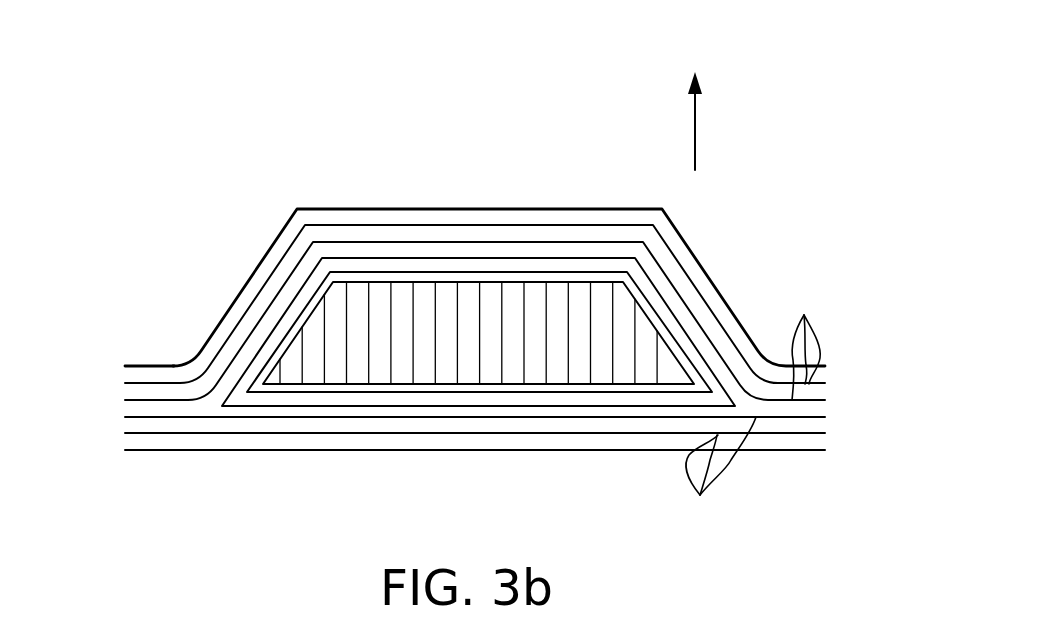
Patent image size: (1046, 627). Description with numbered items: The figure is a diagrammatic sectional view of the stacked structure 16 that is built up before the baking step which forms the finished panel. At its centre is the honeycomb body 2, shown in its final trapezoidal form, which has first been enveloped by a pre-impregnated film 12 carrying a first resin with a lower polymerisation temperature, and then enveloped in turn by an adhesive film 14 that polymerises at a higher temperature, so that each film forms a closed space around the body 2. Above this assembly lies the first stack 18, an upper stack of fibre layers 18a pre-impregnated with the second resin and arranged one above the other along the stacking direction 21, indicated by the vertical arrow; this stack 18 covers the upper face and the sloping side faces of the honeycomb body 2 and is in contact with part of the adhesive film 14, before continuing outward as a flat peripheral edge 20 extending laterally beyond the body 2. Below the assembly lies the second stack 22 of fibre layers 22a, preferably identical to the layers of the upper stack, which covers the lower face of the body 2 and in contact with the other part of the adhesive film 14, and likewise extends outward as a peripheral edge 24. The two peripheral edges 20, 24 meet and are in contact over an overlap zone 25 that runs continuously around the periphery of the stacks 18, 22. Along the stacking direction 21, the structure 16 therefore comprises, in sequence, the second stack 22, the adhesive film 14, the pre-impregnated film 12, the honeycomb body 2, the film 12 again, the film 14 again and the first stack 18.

The honeycomb body 2 is at (466, 378).
The pre-impregnated film 12 is at (577, 270).
The adhesive film 14 is at (527, 257).
The stacked structure 16 is at (726, 247).
The first stack 18 is at (827, 367).
The fibre layers 18a is at (810, 342).
The peripheral edge 20 is at (163, 366).
The stacking direction 21 is at (695, 128).
The second stack 22 is at (827, 416).
The fibre layers 22a is at (721, 473).
The peripheral edge 24 is at (165, 452).
The overlap zone 25 is at (124, 339).